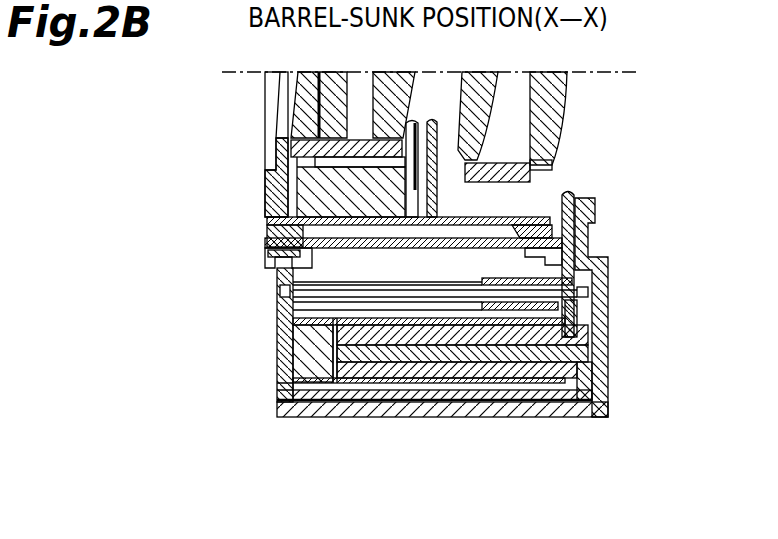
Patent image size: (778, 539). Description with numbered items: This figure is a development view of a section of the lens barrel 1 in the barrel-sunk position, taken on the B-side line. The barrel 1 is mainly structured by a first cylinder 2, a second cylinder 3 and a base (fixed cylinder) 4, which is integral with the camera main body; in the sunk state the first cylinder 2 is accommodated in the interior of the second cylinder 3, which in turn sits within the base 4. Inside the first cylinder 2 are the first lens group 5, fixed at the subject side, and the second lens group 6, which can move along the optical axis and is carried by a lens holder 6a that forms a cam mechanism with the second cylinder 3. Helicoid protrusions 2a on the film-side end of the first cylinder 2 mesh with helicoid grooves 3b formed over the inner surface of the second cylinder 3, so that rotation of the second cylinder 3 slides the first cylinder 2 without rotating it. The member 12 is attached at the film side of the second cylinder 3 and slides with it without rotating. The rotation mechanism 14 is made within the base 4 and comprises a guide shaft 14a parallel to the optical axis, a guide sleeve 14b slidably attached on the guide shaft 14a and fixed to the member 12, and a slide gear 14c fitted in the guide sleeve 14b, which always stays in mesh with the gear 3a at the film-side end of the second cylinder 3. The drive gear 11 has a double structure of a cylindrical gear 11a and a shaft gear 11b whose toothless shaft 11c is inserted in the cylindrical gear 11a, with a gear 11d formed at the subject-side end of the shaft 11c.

The barrel 1 is at (226, 138).
The first cylinder 2 is at (266, 196).
The helicoid protrusions 2a is at (533, 232).
The second cylinder 3 is at (390, 250).
The gear 3a is at (528, 253).
The helicoid grooves 3b is at (458, 218).
The base (fixed cylinder) 4 is at (568, 393).
The first lens group 5 is at (368, 104).
The second lens group 6 is at (515, 100).
The lens holder 6a is at (532, 178).
The drive gear 11 is at (213, 290).
The cylindrical gear 11a is at (365, 320).
The shaft gear 11b is at (295, 350).
The shaft 11c is at (437, 352).
The gear 11d is at (278, 385).
The member 12 is at (562, 190).
The rotation mechanism 14 is at (730, 247).
The guide shaft 14a is at (608, 287).
The guide sleeve 14b is at (608, 325).
The slide gear 14c is at (608, 268).